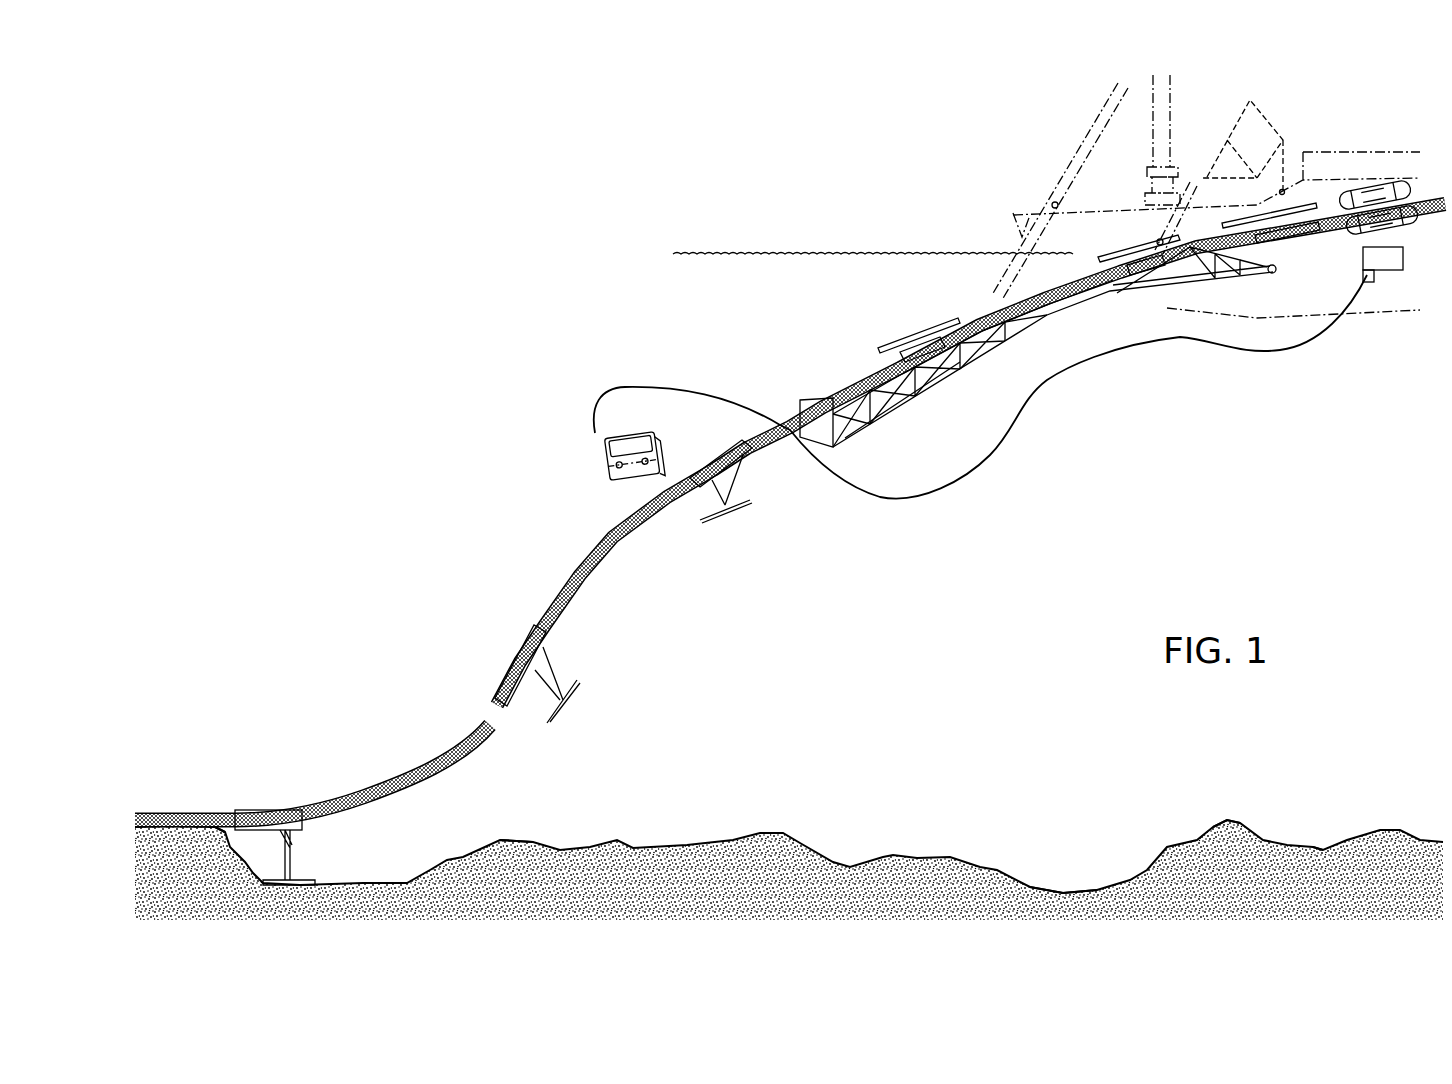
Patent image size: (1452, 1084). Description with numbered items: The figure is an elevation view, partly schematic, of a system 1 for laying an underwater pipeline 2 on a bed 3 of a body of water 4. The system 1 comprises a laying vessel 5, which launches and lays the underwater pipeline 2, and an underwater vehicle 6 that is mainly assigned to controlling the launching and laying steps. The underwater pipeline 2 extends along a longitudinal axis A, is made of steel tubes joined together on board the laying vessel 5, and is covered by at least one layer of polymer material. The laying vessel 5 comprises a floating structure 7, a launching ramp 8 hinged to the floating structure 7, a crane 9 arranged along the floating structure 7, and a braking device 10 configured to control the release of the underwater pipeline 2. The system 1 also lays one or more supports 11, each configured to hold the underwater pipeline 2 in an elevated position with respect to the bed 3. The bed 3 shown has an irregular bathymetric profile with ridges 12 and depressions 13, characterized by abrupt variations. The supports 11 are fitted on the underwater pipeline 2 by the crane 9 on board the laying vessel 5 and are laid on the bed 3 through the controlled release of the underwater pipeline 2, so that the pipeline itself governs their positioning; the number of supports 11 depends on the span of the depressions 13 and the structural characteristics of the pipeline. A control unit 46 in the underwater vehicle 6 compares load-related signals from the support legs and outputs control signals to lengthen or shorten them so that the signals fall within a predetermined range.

The system 1 is at (955, 195).
The underwater pipeline 2 is at (557, 600).
The bed 3 is at (945, 878).
The body of water 4 is at (793, 270).
The laying vessel 5 is at (1385, 145).
The underwater vehicle 6 is at (934, 400).
The floating structure 7 is at (1383, 283).
The launching ramp 8 is at (1077, 333).
The crane 9 is at (1283, 130).
The braking device 10 is at (1418, 230).
The support 11 is at (297, 860).
The ridges 12 is at (218, 827).
The depressions 13 is at (397, 870).
The control unit 46 is at (622, 470).
The longitudinal axis A is at (633, 540).